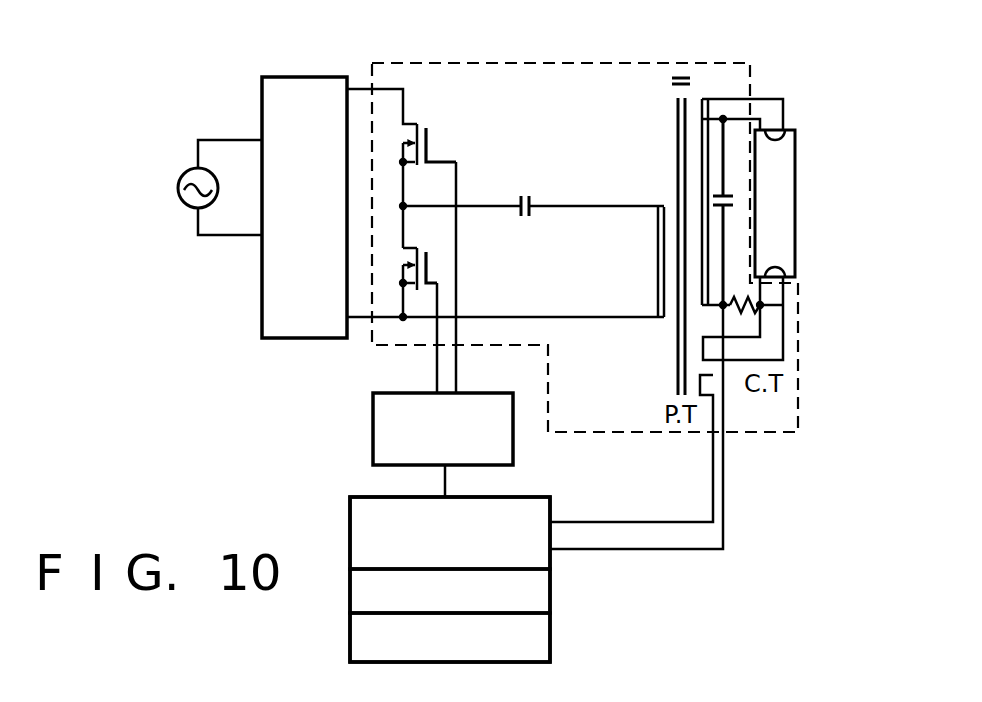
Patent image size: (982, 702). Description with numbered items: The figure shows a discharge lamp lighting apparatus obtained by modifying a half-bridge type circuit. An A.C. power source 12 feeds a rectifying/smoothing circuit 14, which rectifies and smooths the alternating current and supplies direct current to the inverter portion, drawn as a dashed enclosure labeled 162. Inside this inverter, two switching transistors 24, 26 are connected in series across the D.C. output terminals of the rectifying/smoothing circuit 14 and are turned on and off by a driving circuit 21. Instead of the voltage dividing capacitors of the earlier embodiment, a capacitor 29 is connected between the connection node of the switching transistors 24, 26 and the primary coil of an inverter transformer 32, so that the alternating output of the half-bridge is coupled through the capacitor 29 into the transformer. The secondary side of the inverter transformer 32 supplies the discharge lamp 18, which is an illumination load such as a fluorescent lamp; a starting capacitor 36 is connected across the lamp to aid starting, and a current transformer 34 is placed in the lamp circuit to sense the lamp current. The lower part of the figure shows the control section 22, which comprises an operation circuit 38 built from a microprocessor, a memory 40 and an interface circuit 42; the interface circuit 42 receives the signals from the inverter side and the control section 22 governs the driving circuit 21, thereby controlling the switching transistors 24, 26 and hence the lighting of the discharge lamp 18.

The A.C. power source 12 is at (178, 187).
The rectifying/smoothing circuit 14 is at (264, 278).
The inverter unit 162 is at (630, 62).
The switching transistor 24 is at (421, 126).
The switching transistor 26 is at (430, 252).
The capacitor 29 is at (528, 196).
The inverter transformer 32 is at (665, 322).
The starting capacitor 36 is at (740, 190).
The discharge lamp 18 is at (795, 242).
The current transformer 34 is at (748, 327).
The driving circuit 21 is at (373, 428).
The interface circuit 42 is at (350, 533).
The memory 40 is at (549, 596).
The operation circuit 38 is at (549, 642).
The control section 22 is at (442, 582).